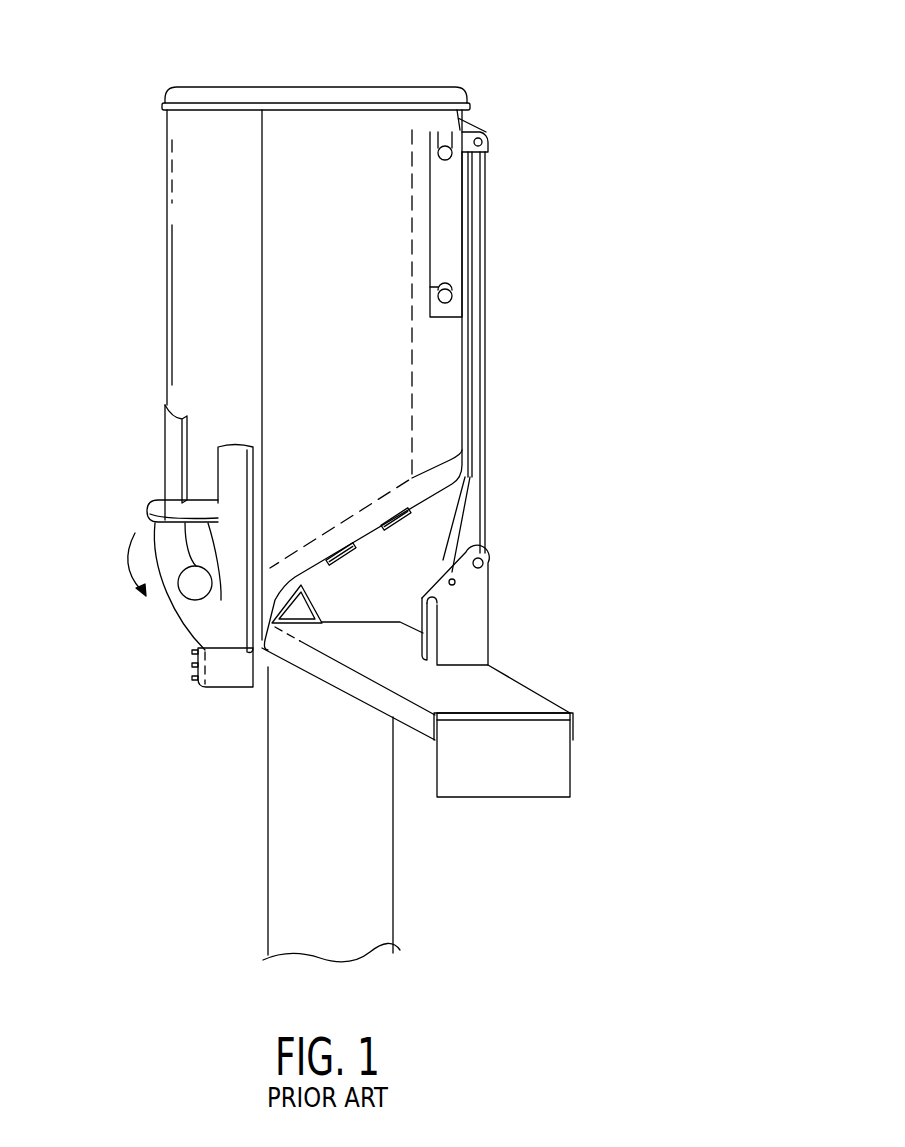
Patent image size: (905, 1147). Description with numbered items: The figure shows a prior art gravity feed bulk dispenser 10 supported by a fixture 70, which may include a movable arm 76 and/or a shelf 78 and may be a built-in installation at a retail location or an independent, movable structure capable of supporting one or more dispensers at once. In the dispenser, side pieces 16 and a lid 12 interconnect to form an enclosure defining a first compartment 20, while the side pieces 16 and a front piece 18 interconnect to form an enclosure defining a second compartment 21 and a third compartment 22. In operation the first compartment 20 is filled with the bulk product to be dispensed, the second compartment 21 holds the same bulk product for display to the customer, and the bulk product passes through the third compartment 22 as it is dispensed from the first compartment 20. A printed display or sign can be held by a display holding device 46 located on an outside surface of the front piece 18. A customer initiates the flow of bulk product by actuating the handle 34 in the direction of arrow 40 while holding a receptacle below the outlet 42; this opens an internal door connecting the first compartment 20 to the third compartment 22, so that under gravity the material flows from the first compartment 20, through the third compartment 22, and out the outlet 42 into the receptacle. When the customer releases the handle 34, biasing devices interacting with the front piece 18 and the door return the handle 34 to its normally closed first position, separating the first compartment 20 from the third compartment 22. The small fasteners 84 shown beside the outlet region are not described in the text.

The bulk dispenser 10 is at (246, 52).
The lid 12 is at (178, 88).
The first compartment 20 is at (338, 133).
The second compartment 21 is at (185, 195).
The front piece 18 is at (167, 333).
The side pieces 16 is at (344, 510).
The display holding device 46 is at (172, 437).
The handle 34 is at (150, 512).
The arrow 40 is at (118, 565).
The third compartment 22 is at (220, 598).
The fasteners 84 is at (186, 668).
The outlet 42 is at (213, 699).
The movable arm 76 is at (498, 408).
The fixture 70 is at (500, 625).
The shelf 78 is at (505, 693).